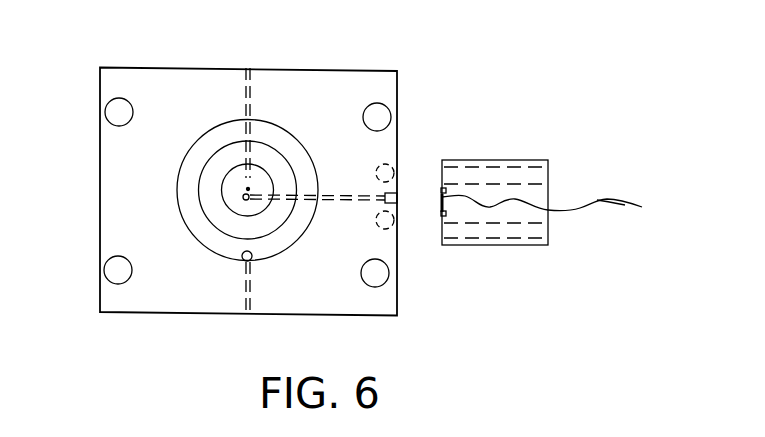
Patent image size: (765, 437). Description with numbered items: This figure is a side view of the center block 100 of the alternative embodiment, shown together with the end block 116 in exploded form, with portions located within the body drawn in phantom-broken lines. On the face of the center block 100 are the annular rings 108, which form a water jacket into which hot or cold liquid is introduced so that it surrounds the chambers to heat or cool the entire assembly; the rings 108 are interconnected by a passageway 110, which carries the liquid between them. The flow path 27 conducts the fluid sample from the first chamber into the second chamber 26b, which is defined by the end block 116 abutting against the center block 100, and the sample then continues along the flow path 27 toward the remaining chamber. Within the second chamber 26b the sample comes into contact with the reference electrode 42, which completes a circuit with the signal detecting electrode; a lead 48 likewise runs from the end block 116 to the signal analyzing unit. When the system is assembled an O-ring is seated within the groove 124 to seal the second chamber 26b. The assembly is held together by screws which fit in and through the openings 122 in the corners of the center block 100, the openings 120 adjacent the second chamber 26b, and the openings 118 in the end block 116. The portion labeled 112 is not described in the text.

The center block 100 is at (151, 67).
The opening 122 is at (113, 110).
The flow path 27 is at (253, 100).
The lower center line 112 is at (245, 287).
The annular rings 108 is at (283, 144).
The passageway 110 is at (253, 257).
The second chamber 26b is at (395, 198).
The opening 120 is at (395, 217).
The end block 116 is at (532, 160).
The opening 118 is at (510, 230).
The groove 124 is at (445, 213).
The reference electrode 42 is at (462, 196).
The compensating electrode lead 48 is at (593, 207).